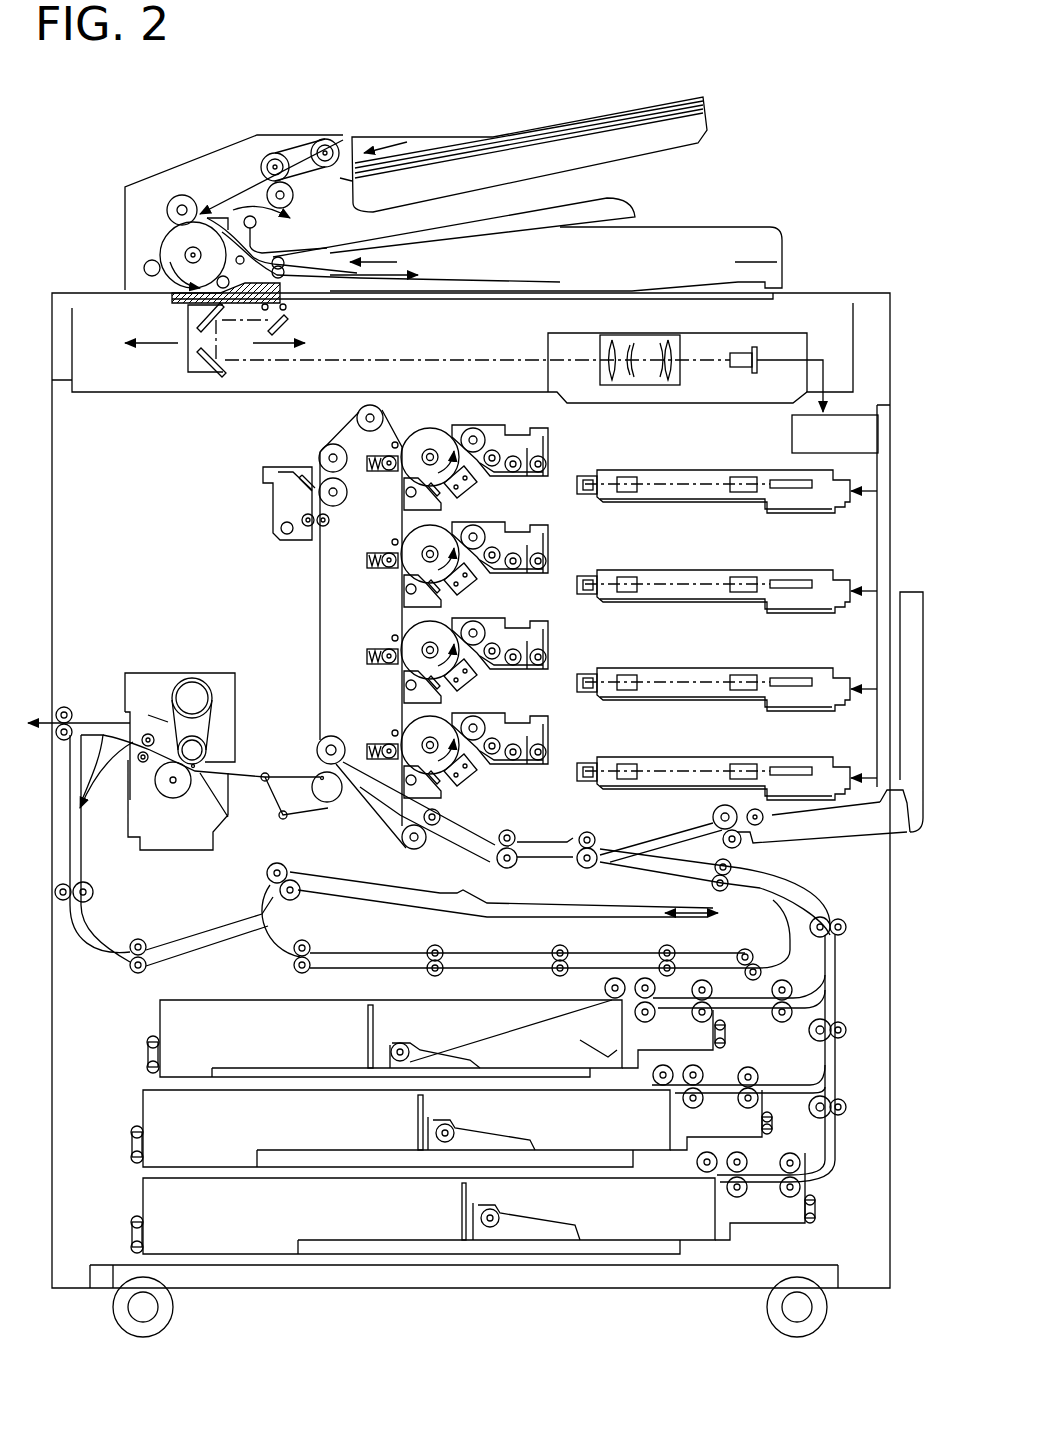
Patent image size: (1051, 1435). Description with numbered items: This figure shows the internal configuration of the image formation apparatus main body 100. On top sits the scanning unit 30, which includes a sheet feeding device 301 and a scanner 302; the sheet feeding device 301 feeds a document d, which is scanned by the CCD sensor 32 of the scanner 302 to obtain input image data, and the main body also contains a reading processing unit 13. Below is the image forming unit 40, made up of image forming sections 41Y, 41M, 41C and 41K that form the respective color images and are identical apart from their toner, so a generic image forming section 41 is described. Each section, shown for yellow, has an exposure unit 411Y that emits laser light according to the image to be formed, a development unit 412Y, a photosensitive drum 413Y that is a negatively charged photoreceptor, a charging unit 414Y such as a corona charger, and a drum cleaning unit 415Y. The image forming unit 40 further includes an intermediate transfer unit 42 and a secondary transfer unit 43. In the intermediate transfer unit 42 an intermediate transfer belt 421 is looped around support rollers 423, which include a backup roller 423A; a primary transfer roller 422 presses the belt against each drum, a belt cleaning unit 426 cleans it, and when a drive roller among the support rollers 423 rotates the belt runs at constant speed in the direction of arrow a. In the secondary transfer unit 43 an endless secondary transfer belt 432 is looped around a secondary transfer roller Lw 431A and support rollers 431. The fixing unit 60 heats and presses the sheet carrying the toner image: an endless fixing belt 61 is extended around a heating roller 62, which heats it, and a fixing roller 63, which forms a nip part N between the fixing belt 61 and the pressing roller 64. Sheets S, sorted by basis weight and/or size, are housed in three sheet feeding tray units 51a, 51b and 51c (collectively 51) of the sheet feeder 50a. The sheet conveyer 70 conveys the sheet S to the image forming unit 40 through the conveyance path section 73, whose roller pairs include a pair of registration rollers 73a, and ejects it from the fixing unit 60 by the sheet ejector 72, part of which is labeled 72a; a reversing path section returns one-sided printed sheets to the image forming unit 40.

The image formation apparatus main body 100 is at (410, 82).
The scanning unit 30 is at (406, 196).
The sheet feeding device 301 is at (125, 208).
The scanner 302 is at (65, 292).
The document d is at (565, 124).
The CCD sensor 32 is at (757, 357).
The reading processing unit 13 is at (868, 440).
The image forming unit 40 is at (637, 611).
The image forming section 41 is at (604, 611).
The image forming section 41Y is at (604, 476).
The image forming section 41M is at (562, 599).
The image forming section 41C is at (562, 693).
The image forming section 41K is at (562, 784).
The exposure unit 411Y is at (700, 470).
The development unit 412Y is at (548, 438).
The photosensitive drum 413Y is at (417, 430).
The charging unit 414Y is at (477, 487).
The drum cleaning unit 415Y is at (412, 510).
The intermediate transfer unit 42 is at (257, 495).
The intermediate transfer belt 421 is at (330, 638).
The primary transfer roller 422 is at (387, 471).
The support rollers 423 is at (327, 451).
The secondary transfer roller Up (backup roller) 423A is at (318, 738).
The belt cleaning unit 426 is at (280, 521).
The secondary transfer unit 43 is at (291, 793).
The support rollers 431 is at (283, 818).
The secondary transfer roller Lw 431A is at (320, 778).
The secondary transfer belt 432 is at (318, 800).
The arrow a is at (325, 602).
The fixing unit 60 is at (203, 695).
The fixing belt 61 is at (212, 720).
The heating roller 62 is at (192, 679).
The fixing roller 63 is at (208, 752).
The pressing roller 64 is at (173, 798).
The nip part N is at (193, 773).
The sheet conveyer 70 is at (476, 896).
The sheet ejector 72 is at (72, 697).
The sheet ejection rollers 72a is at (72, 733).
The conveyance path section 73 is at (516, 831).
The pair of registration rollers 73a is at (438, 836).
The sheet feeder 50a is at (843, 1080).
The sheet feed tray unit 51 is at (430, 1118).
The sheet feeding tray unit 51a is at (384, 1030).
The sheet feeding tray unit 51b is at (143, 1118).
The sheet feeding tray unit 51c is at (140, 1217).
The sheet S is at (500, 1028).